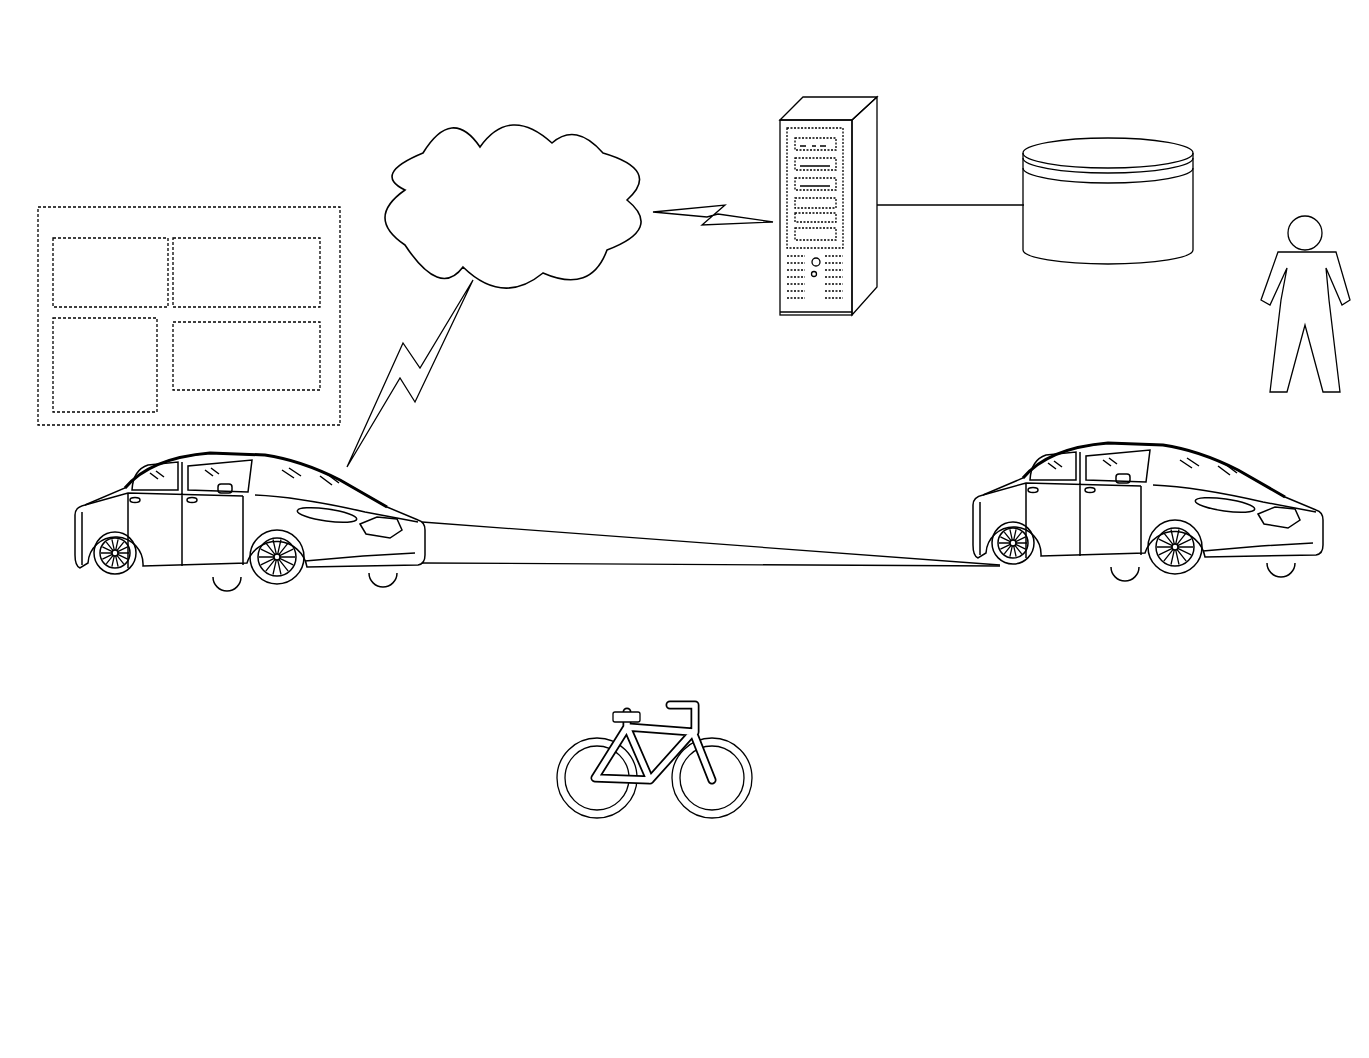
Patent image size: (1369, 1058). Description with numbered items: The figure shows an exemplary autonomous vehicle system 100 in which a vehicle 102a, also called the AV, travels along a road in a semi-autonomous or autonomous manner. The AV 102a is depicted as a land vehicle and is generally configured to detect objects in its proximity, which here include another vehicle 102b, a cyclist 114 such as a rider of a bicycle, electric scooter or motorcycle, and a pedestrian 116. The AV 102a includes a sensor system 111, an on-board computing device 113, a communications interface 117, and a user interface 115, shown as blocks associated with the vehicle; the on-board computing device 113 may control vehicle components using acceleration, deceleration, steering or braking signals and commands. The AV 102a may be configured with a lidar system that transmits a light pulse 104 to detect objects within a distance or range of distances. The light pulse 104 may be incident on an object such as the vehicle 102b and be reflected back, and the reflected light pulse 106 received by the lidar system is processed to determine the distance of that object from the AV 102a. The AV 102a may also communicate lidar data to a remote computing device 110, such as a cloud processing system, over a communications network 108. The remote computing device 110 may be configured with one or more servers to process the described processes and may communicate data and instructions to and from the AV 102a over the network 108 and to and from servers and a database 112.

The autonomous vehicle system 100 is at (178, 137).
The vehicle 102a is at (185, 570).
The vehicle 102b is at (1085, 558).
The light pulse 104 is at (783, 546).
The reflected light pulse 106 is at (848, 566).
The communications network 108 is at (508, 120).
The remote computing device 110 is at (840, 104).
The sensor system 111 is at (110, 272).
The database 112 is at (1122, 143).
The on-board computing device 113 is at (152, 465).
The cyclist 114 is at (753, 777).
The user interface 115 is at (246, 356).
The pedestrian 116 is at (1303, 337).
The communications interface 117 is at (246, 272).